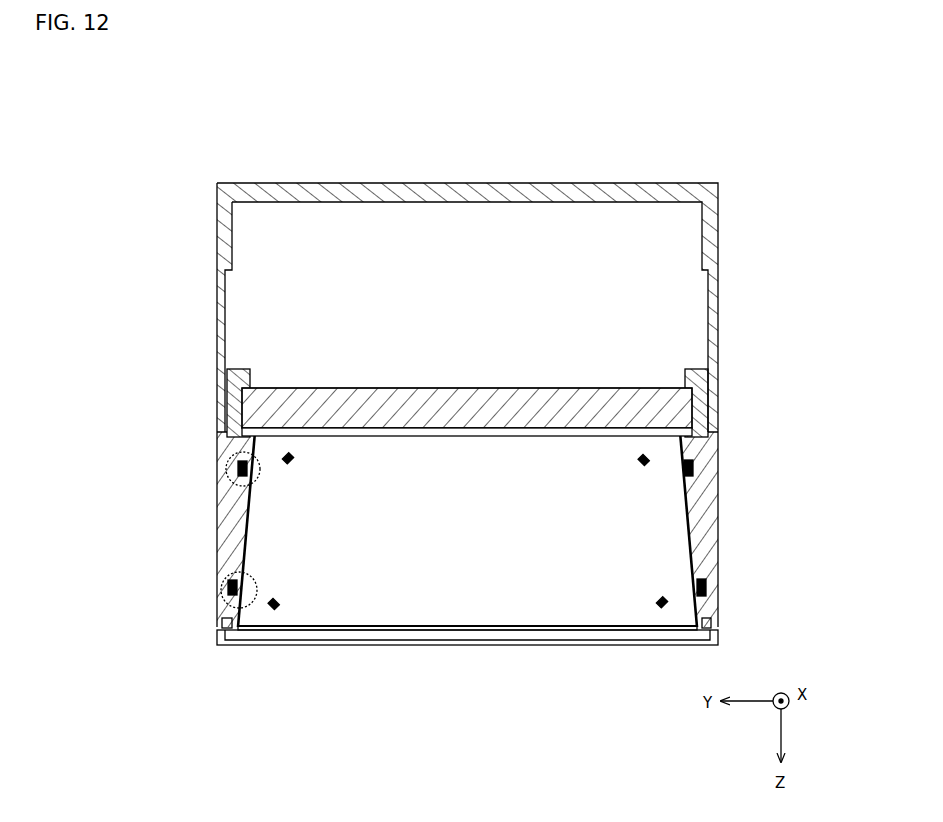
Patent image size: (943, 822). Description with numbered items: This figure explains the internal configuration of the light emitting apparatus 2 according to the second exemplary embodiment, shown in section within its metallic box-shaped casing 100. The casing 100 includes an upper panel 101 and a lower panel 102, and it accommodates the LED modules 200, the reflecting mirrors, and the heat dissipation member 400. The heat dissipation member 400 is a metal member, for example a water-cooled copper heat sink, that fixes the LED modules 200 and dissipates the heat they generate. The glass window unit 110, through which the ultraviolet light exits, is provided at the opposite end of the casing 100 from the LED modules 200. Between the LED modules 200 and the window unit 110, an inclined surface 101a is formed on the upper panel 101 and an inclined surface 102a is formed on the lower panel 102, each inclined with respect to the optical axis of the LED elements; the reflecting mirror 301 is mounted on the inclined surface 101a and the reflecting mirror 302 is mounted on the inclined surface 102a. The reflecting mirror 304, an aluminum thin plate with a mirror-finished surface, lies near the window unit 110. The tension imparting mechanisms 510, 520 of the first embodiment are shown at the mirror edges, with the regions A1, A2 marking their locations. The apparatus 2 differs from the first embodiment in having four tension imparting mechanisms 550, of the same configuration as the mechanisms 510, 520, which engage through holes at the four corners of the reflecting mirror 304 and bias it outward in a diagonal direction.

The light emitting apparatus 2 is at (752, 110).
The casing 100 is at (575, 183).
The upper panel 101 is at (217, 325).
The lower panel 102 is at (718, 330).
The inclined surface 101a is at (247, 527).
The inclined surface 102a is at (692, 522).
The LED modules 200 is at (256, 407).
The reflecting mirror 301 is at (247, 542).
The reflecting mirror 302 is at (690, 548).
The reflecting mirror 304 is at (370, 610).
The heat dissipation member 400 is at (663, 385).
The tension imparting mechanism 510 is at (237, 474).
The tension imparting mechanism 520 is at (228, 594).
The tension imparting mechanism 550 is at (293, 465).
The window unit 110 is at (615, 640).
The region A1 is at (227, 463).
The region A2 is at (226, 584).